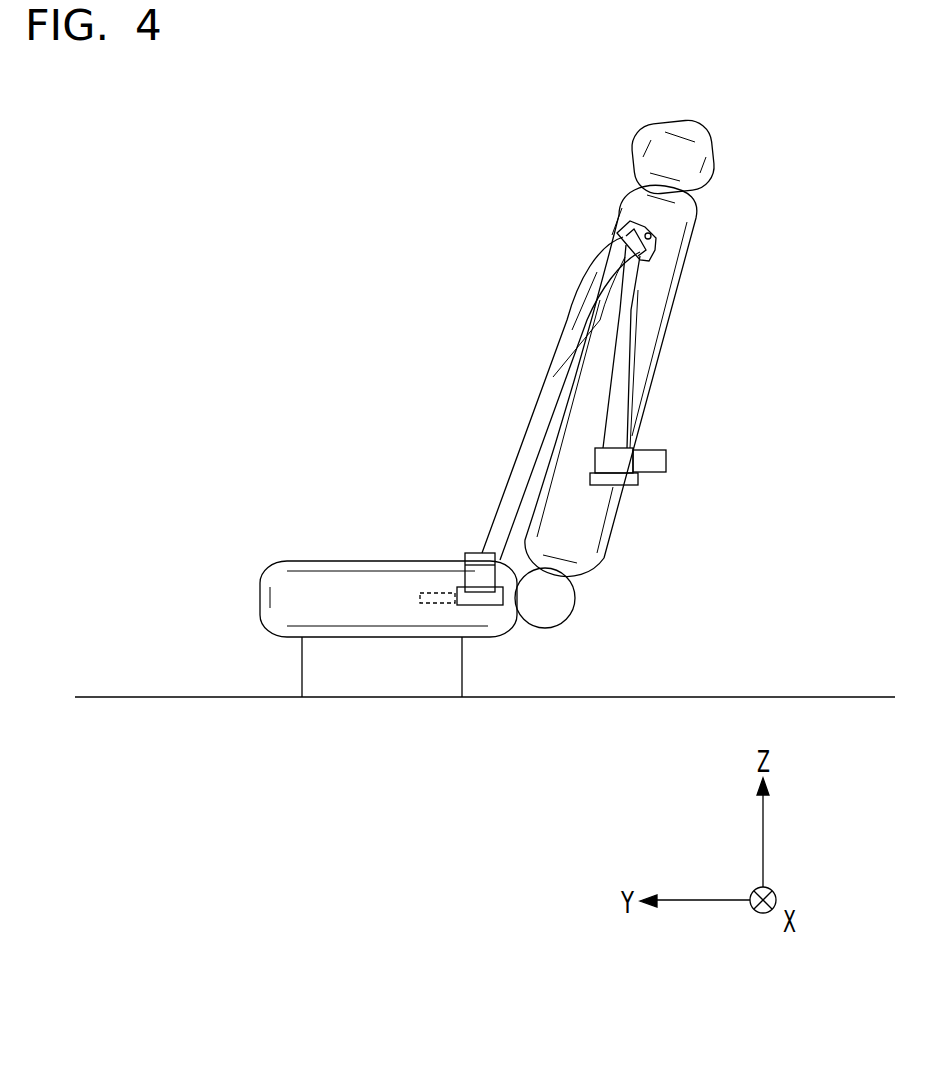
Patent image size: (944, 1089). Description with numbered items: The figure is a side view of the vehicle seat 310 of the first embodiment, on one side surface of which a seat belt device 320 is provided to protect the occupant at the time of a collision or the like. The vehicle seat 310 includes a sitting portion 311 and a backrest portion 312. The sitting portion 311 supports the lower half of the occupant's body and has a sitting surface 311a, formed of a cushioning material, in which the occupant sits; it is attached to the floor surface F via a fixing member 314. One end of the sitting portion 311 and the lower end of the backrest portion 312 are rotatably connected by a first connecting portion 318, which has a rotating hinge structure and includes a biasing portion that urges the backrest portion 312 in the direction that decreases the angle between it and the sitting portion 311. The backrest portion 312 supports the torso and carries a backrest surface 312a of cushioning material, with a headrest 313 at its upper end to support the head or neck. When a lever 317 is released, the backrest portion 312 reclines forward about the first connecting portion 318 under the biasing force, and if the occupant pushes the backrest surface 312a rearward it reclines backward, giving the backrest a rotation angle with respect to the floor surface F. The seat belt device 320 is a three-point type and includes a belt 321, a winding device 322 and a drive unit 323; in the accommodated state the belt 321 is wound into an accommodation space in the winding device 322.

The vehicle seat 310 is at (380, 357).
The sitting portion 311 is at (292, 588).
The sitting surface 311a is at (363, 559).
The backrest portion 312 is at (592, 537).
The backrest surface 312a is at (604, 238).
The headrest 313 is at (703, 149).
The fixing member 314 is at (462, 666).
The lever 317 is at (433, 592).
The first connecting portion 318 is at (563, 605).
The seat belt device 320 is at (655, 440).
The belt 321 is at (525, 453).
The winding device 322 is at (622, 482).
The drive unit 323 is at (665, 462).
The floor surface F is at (819, 696).